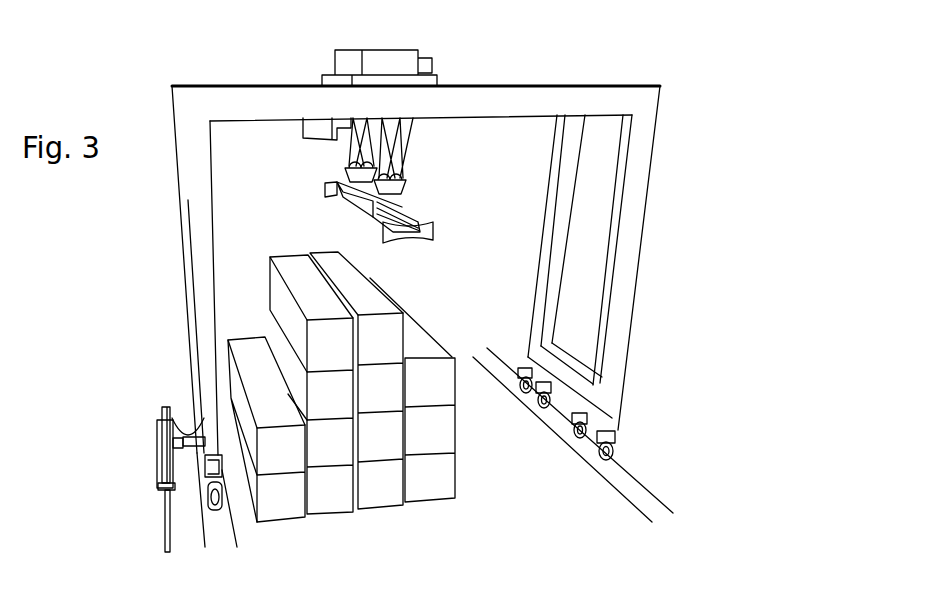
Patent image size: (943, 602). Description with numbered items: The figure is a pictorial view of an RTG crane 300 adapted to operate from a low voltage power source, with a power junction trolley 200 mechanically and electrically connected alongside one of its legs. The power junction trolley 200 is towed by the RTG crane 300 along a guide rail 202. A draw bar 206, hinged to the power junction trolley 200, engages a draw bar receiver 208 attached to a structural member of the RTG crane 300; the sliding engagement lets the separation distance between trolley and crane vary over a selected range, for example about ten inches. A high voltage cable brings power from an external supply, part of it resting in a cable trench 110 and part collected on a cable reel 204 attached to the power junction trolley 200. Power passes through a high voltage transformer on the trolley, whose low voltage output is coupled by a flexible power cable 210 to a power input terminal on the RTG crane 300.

The RTG crane 300 is at (172, 87).
The cable trench 110 is at (204, 547).
The power junction trolley 200 is at (157, 472).
The guide rail 202 is at (165, 508).
The cable reel 204 is at (158, 420).
The draw bar 206 is at (183, 452).
The draw bar receiver 208 is at (192, 452).
The flexible power cable 210 is at (183, 420).